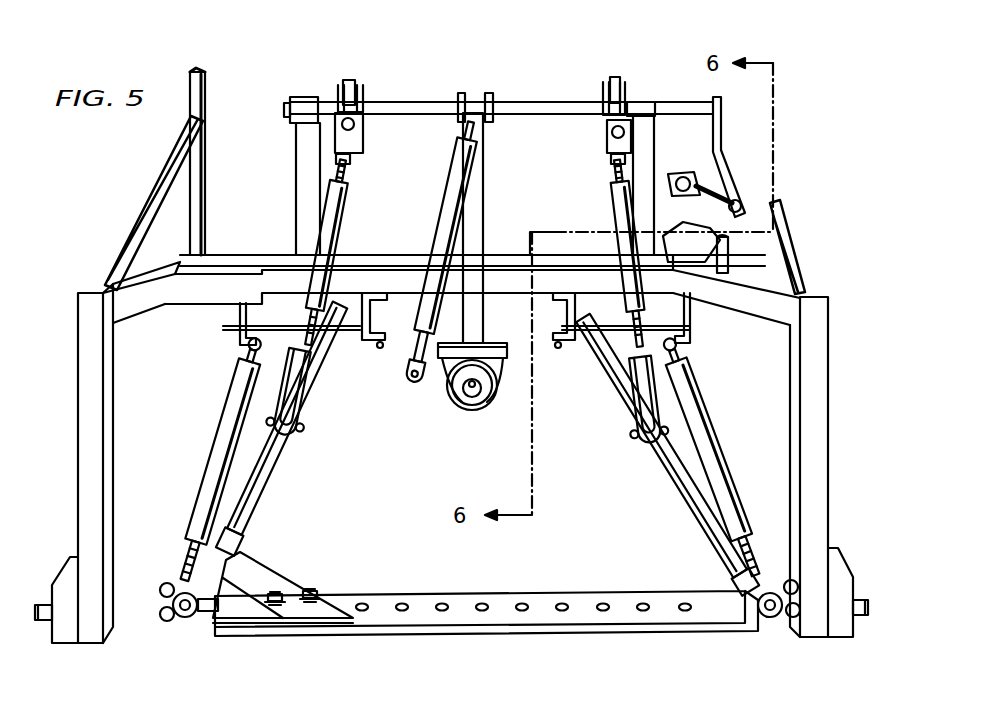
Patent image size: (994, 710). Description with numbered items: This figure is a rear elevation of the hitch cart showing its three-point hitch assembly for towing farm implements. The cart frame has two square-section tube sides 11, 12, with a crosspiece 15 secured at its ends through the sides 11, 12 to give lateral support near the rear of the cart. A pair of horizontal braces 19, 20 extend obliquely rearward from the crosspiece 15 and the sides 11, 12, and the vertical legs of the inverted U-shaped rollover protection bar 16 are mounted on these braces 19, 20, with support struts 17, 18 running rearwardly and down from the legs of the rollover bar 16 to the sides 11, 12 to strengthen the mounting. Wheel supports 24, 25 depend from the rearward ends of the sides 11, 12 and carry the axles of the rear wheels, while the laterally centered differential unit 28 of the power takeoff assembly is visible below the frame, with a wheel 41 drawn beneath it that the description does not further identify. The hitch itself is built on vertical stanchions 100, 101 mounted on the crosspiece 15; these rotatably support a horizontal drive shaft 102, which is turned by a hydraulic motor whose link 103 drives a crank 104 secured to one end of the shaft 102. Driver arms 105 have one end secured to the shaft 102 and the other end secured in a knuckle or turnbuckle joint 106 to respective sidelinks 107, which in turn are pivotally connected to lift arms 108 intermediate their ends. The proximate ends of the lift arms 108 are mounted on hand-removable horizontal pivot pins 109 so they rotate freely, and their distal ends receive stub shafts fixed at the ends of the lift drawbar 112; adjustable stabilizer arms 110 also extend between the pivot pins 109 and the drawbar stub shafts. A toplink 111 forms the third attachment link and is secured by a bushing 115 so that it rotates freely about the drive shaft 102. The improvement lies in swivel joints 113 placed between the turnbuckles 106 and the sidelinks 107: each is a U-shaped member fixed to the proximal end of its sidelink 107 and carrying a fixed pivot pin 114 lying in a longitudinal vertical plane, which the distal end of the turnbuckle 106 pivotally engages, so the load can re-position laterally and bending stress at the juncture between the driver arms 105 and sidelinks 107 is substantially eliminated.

The side 11 is at (790, 310).
The side 12 is at (140, 305).
The crosspiece 15 is at (372, 256).
The rollover protection bar 16 is at (243, 66).
The support strut 17 is at (798, 238).
The support strut 18 is at (152, 196).
The horizontal brace 19 is at (746, 300).
The horizontal brace 20 is at (197, 290).
The wheel support 24 is at (820, 440).
The wheel support 25 is at (78, 438).
The differential unit 28 is at (498, 380).
The wheel 41 is at (468, 398).
The vertical stanchion 100 is at (655, 135).
The vertical stanchion 101 is at (296, 138).
The horizontal drive shaft 102 is at (440, 100).
The link 103 is at (712, 176).
The crank 104 is at (722, 125).
The driver arm 105 is at (346, 80).
The knuckle or turnbuckle joint 106 is at (363, 90).
The sidelink 107 is at (326, 203).
The lift arm 108 is at (272, 478).
The hand-removable horizontal pivot pin 109 is at (366, 338).
The adjustable stabilizer arm 110 is at (225, 432).
The toplink 111 is at (450, 185).
The lift drawbar 112 is at (446, 632).
The swivel joint 113 is at (352, 158).
The fixed pivot pin 114 is at (364, 130).
The bushing 115 is at (478, 92).